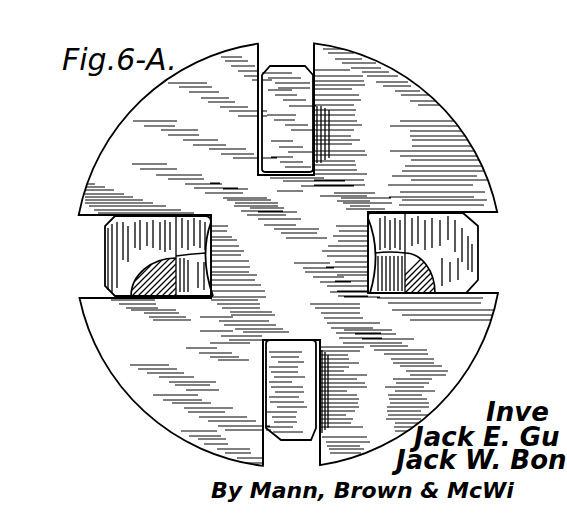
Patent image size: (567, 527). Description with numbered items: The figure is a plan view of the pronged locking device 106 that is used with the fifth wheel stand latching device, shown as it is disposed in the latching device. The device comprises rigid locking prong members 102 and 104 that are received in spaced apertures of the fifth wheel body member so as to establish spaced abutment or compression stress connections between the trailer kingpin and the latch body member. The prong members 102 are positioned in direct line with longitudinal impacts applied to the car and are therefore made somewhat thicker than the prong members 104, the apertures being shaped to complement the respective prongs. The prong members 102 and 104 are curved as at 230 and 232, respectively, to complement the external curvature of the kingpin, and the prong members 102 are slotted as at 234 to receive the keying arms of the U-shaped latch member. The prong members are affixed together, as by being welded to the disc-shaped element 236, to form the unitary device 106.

The pronged locking device 106 is at (106, 368).
The disc-shaped element 236 is at (421, 116).
The rigid locking prong member 102 is at (132, 247).
The rigid locking prong member 104 is at (281, 80).
The curved portion 232 is at (283, 176).
The curved portion 230 is at (208, 250).
The slot 234 is at (186, 296).